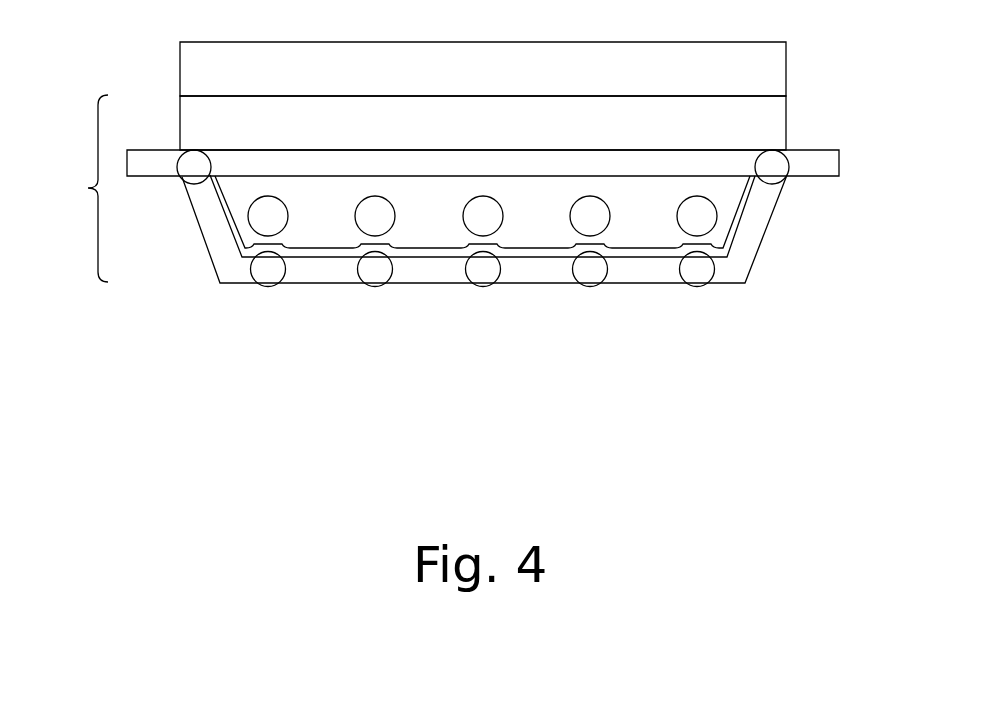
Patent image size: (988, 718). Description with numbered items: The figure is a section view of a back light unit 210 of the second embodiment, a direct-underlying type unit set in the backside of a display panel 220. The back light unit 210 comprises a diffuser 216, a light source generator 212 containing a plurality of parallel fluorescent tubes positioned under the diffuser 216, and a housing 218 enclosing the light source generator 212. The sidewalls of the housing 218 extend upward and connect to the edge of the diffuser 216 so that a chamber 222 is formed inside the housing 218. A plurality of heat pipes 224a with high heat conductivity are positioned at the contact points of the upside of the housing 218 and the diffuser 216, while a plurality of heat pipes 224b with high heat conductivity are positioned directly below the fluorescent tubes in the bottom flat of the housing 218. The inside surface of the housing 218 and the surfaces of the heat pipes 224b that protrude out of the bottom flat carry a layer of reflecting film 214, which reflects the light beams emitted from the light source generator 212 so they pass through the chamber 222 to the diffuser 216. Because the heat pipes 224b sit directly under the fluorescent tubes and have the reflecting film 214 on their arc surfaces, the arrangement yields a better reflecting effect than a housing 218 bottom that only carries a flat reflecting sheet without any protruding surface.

The back light unit 210 is at (68, 188).
The light source generator 212 is at (705, 222).
The reflecting film 214 is at (536, 252).
The diffuser 216 is at (765, 120).
The housing 218 is at (420, 270).
The display panel 220 is at (765, 66).
The chamber 222 is at (235, 195).
The heat pipes 224a is at (775, 166).
The heat pipes 224b is at (700, 273).